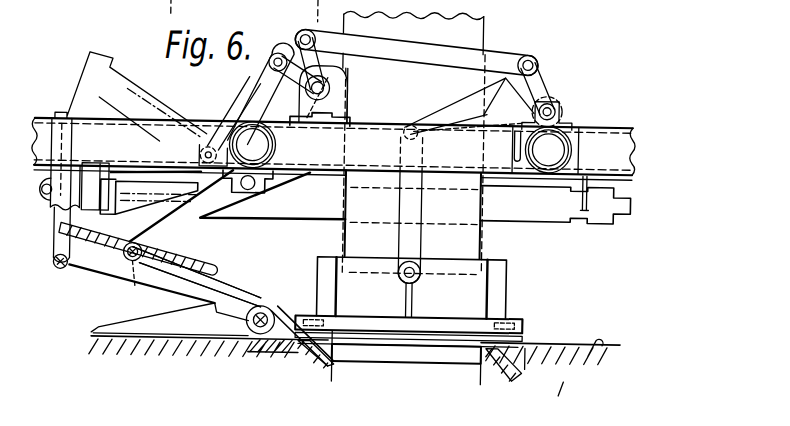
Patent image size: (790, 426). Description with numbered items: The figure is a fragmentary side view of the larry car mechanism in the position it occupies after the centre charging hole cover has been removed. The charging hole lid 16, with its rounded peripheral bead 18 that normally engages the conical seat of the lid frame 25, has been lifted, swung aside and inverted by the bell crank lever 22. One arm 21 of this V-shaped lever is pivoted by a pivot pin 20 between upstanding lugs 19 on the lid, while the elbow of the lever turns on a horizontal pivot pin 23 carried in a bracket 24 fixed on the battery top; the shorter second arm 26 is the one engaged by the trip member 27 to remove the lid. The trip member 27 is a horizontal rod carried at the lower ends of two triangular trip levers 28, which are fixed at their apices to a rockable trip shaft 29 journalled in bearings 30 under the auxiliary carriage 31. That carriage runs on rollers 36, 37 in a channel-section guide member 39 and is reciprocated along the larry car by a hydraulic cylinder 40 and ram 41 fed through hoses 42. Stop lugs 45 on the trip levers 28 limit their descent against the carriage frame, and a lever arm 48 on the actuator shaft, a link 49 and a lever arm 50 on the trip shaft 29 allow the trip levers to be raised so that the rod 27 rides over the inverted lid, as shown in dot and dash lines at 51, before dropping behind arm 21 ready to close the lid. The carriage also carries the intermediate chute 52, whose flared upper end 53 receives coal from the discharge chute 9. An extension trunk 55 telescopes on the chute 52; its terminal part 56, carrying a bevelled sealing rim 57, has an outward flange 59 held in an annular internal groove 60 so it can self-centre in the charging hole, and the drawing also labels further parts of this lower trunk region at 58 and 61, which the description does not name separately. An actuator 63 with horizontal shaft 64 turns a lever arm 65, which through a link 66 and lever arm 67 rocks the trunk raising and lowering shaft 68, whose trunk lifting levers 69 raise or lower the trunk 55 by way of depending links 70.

The discharge chute 9 is at (481, 36).
The charging hole lid 16 is at (53, 243).
The peripheral bead 18 is at (202, 276).
The upstanding lugs 19 is at (134, 282).
The pivot pin 20 is at (127, 265).
The arm 21 is at (232, 285).
The bell crank lever 22 is at (232, 292).
The pivot pin 23 is at (267, 312).
The bracket 24 is at (233, 345).
The lid frame 25 is at (338, 368).
The second arm 26 is at (134, 326).
The trip member 27 is at (55, 268).
The trip levers 28 is at (200, 222).
The trip shaft 29 is at (250, 188).
The bearings 30 is at (273, 166).
The auxiliary carriage 31 is at (355, 159).
The roller 36 is at (242, 112).
The roller 37 is at (578, 147).
The guide member 39 is at (589, 162).
The cylinder 40 is at (618, 221).
The ram 41 is at (62, 217).
The hoses 42 is at (590, 239).
The stop lugs 45 is at (104, 59).
The lever arm 48 is at (291, 84).
The link 49 is at (262, 90).
The lever arm 50 is at (210, 216).
The dot and dash line position 51 is at (170, 108).
The intermediate chute 52 is at (360, 215).
The flared upper end 53 is at (406, 108).
The extension trunk 55 is at (496, 306).
The terminal part 56 is at (467, 353).
The sealing rim 57 is at (432, 357).
The wedge block 58 is at (527, 349).
The flange 59 is at (327, 318).
The annular internal groove 60 is at (312, 316).
The top plate 61 is at (435, 327).
The actuator 63 is at (347, 90).
The horizontal shaft 64 is at (324, 121).
The lever arm 65 is at (310, 30).
The link 66 is at (505, 60).
The lever arm 67 is at (533, 86).
The trunk raising and lowering shaft 68 is at (552, 103).
The trunk lifting levers 69 is at (447, 116).
The depending link 70 is at (399, 234).